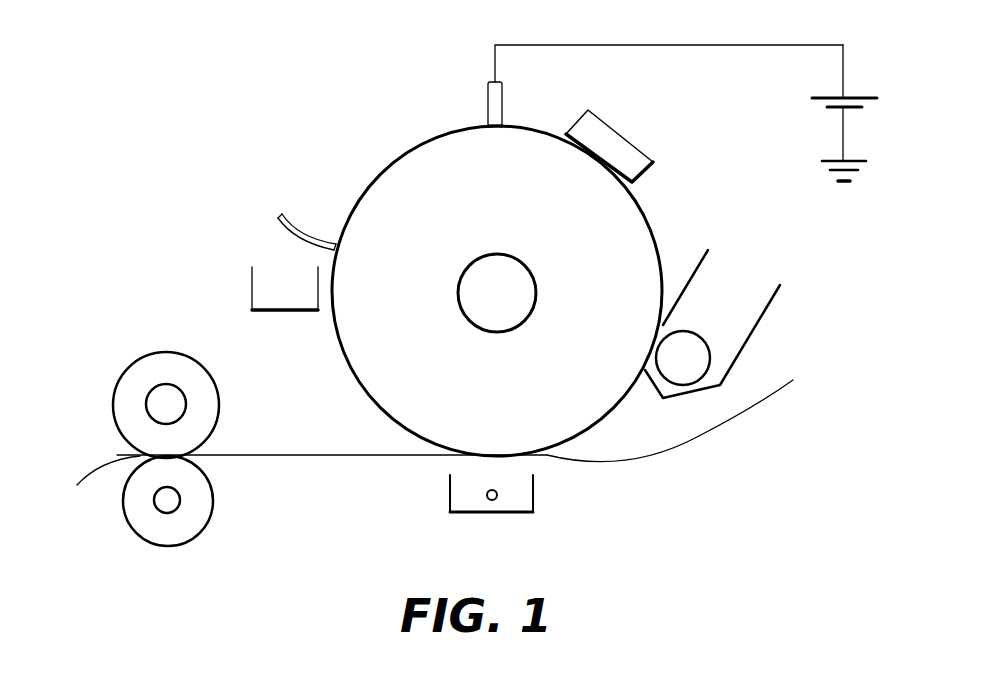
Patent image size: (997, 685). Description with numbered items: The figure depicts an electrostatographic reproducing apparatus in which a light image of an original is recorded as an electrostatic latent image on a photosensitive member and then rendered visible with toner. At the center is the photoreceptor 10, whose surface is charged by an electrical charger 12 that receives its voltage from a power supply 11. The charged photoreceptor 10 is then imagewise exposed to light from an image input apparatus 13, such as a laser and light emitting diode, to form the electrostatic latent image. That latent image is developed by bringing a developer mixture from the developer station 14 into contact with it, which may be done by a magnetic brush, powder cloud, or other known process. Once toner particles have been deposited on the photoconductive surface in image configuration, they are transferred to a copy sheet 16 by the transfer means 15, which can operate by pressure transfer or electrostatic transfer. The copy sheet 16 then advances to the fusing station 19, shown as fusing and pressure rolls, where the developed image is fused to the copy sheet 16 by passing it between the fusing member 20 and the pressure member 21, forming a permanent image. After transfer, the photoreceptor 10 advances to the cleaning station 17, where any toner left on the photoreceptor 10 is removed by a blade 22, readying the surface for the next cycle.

The photoreceptor 10 is at (650, 230).
The power supply 11 is at (845, 72).
The electrical charger 12 is at (500, 110).
The image input apparatus 13 is at (628, 150).
The developer station 14 is at (728, 292).
The transfer means 15 is at (533, 510).
The copy sheet 16 is at (745, 417).
The cleaning station 17 is at (263, 235).
The fusing station 19 is at (155, 450).
The fusing member 20 is at (212, 390).
The pressure member 21 is at (205, 508).
The blade 22 is at (298, 232).